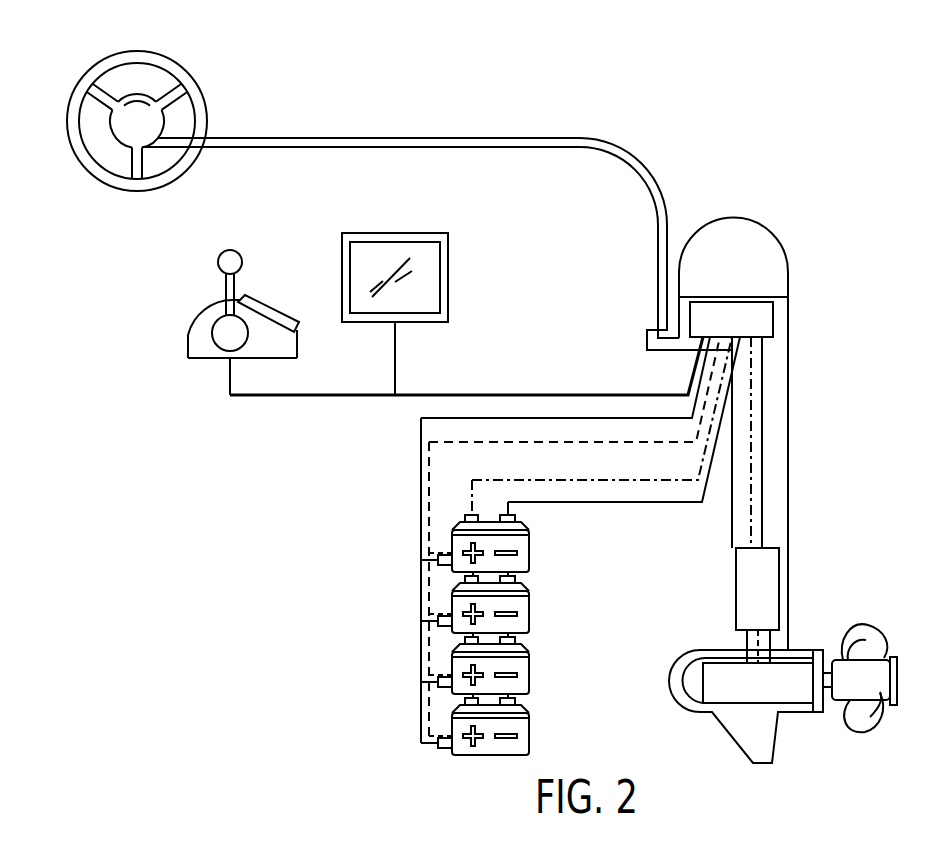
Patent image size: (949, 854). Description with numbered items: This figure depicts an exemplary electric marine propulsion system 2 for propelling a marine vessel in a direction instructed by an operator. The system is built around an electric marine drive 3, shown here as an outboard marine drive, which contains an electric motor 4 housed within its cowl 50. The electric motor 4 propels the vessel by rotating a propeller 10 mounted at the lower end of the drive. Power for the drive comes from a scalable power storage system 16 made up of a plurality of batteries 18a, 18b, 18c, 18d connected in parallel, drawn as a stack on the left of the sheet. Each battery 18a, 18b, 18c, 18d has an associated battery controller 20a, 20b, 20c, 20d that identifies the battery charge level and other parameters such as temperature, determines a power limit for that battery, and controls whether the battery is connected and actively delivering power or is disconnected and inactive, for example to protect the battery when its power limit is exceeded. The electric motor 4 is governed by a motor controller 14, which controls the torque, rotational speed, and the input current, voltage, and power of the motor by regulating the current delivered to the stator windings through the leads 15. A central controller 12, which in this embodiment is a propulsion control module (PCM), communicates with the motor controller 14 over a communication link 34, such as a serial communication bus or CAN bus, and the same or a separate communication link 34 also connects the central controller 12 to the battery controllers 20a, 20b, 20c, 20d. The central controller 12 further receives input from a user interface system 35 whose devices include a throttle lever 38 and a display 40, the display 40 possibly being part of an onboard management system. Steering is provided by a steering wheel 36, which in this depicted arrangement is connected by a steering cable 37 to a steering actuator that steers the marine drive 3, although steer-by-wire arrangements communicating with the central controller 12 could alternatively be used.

The electric marine propulsion system 2 is at (706, 95).
The electric marine drive 3 is at (755, 404).
The electric motor 4 is at (750, 712).
The propeller 10 is at (878, 725).
The central controller 12 is at (776, 322).
The motor controller 14 is at (789, 573).
The leads 15 is at (745, 641).
The power storage system 16 is at (385, 607).
The battery 18a is at (530, 538).
The battery 18b is at (530, 599).
The battery 18c is at (530, 660).
The battery 18d is at (530, 721).
The battery controller 20a is at (438, 563).
The battery controller 20b is at (438, 624).
The battery controller 20c is at (438, 685).
The battery controller 20d is at (438, 746).
The communication link 34 is at (507, 395).
The user interface system 35 is at (458, 80).
The steering wheel 36 is at (187, 64).
The steering cable 37 is at (382, 137).
The throttle lever 38 is at (232, 250).
The display 40 is at (398, 233).
The cowl 50 is at (735, 218).